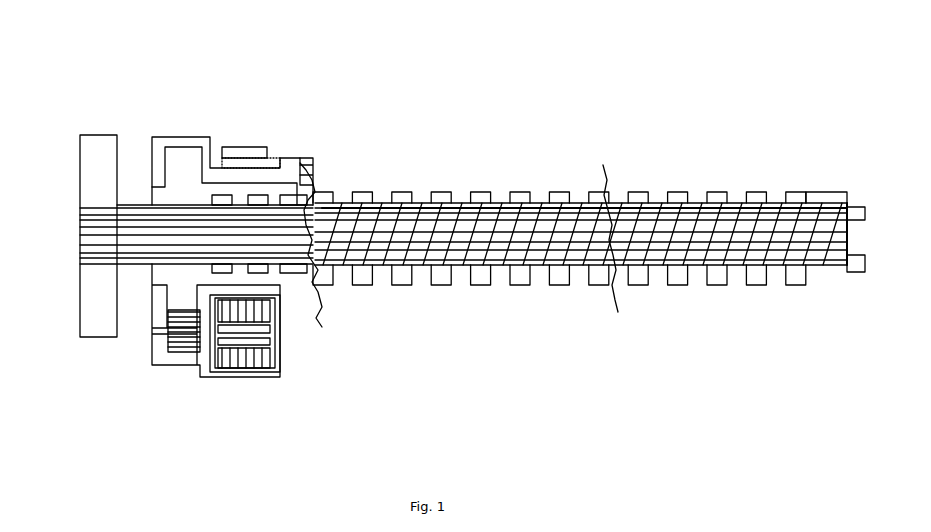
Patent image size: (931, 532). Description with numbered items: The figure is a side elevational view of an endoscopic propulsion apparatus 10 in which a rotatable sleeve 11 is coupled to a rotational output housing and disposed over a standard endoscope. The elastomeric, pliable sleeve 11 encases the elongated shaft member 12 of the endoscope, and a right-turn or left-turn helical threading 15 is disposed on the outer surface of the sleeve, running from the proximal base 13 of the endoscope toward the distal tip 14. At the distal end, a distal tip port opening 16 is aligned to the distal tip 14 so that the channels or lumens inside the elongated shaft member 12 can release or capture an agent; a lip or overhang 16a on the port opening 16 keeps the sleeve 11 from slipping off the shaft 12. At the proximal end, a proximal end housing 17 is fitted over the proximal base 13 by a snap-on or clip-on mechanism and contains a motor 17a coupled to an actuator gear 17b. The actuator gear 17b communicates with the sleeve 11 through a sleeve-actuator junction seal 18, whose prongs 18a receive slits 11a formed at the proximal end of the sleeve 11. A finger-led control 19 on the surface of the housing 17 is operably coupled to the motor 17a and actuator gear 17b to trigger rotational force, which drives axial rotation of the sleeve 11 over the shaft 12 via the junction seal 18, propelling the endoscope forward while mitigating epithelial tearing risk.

The linear actuator assembly 10 is at (288, 50).
The rotatable sleeve 11 is at (698, 172).
The slits 11a is at (272, 267).
The elongated shaft member 12 is at (142, 208).
The proximal base 13 is at (77, 197).
The distal tip 14 is at (877, 253).
The helical threading 15 is at (693, 287).
The distal tip port opening 16 is at (855, 238).
The overhang 16a is at (845, 210).
The proximal end housing 17 is at (185, 380).
The motor 17a is at (250, 372).
The actuator gear 17b is at (168, 350).
The sleeve-actuator junction seal 18 is at (302, 168).
The prongs 18a is at (280, 268).
The finger-led control 19 is at (225, 143).